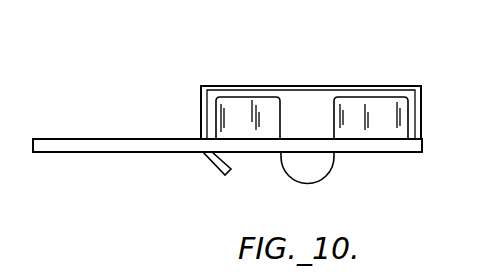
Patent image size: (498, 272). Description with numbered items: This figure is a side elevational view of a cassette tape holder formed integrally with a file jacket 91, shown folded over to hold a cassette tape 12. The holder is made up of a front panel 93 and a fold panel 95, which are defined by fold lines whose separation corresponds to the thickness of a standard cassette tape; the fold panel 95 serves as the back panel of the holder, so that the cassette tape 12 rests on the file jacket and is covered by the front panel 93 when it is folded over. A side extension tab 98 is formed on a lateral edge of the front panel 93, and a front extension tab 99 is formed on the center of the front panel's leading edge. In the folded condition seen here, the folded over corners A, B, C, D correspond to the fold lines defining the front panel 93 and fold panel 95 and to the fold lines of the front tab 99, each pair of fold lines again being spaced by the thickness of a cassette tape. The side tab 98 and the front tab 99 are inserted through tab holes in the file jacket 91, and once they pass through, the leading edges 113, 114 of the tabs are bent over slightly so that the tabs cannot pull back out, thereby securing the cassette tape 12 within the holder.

The file jacket 91 is at (103, 139).
The front extension tab 99 is at (201, 115).
The fold panel 95 is at (421, 121).
The front panel 93 is at (250, 86).
The cassette tape 12 is at (353, 106).
The side extension tab 98 is at (305, 110).
The leading edge of tab 113 is at (222, 178).
The leading edge of tab 114 is at (322, 170).
The folded over corner D is at (201, 85).
The folded over corner A is at (424, 84).
The folded over corner B is at (425, 155).
The folded over corner C is at (200, 156).